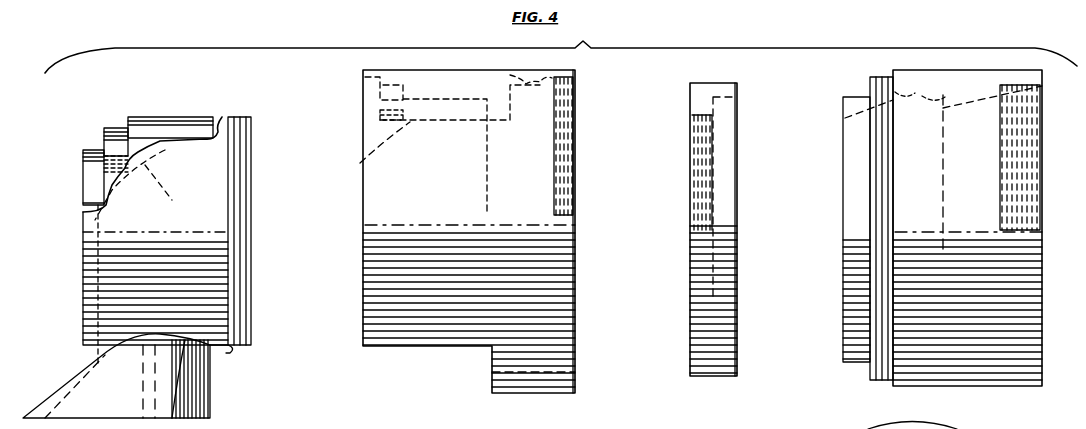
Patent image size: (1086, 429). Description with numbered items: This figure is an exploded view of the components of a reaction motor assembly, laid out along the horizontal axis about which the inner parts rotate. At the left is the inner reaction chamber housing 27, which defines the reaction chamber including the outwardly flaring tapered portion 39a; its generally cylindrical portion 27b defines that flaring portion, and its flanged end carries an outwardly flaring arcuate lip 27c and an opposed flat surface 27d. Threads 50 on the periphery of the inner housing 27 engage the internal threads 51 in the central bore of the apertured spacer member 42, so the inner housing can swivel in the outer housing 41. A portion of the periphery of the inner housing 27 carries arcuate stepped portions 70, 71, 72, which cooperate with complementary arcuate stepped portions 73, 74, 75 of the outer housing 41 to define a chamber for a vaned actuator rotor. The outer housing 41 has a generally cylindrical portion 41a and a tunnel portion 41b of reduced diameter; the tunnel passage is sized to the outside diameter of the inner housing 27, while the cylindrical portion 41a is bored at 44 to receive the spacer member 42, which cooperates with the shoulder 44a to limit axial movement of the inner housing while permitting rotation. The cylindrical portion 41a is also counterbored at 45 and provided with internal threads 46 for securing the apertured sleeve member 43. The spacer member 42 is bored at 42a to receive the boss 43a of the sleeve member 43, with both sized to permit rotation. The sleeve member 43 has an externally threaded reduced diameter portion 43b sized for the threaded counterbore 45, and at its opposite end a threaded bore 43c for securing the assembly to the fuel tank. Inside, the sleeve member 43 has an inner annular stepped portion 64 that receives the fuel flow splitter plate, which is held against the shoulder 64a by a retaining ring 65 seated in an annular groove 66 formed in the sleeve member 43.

The inner reaction chamber housing 27 is at (83, 290).
The generally cylindrical portion 27b is at (232, 352).
The outwardly flaring arcuate lip 27c is at (52, 387).
The flat surface 27d is at (212, 385).
The outwardly flaring tapered portion 39a is at (152, 168).
The outer housing 41 is at (425, 70).
The generally cylindrical portion 41a is at (492, 370).
The tunnel portion 41b is at (415, 346).
The apertured spacer member 42 is at (728, 83).
The bore 42a is at (738, 355).
The apertured sleeve member 43 is at (998, 386).
The boss 43a is at (852, 366).
The reduced diameter portion 43b is at (883, 80).
The bore 43c is at (1030, 92).
The bore 44 is at (550, 80).
The shoulder 44a is at (518, 76).
The counterbore 45 is at (580, 84).
The internal threads 46 is at (578, 374).
The threads 50 is at (236, 117).
The internal threads 51 is at (690, 118).
The inner annular stepped portion 64 is at (945, 108).
The shoulder 64a is at (975, 102).
The retaining ring 65 is at (902, 92).
The annular groove 66 is at (924, 96).
The arcuate stepped portion 70 is at (83, 168).
The arcuate stepped portion 71 is at (116, 136).
The arcuate stepped portion 72 is at (157, 121).
The arcuate stepped portion 73 is at (375, 88).
The arcuate stepped portion 74 is at (380, 108).
The arcuate stepped portion 75 is at (374, 151).